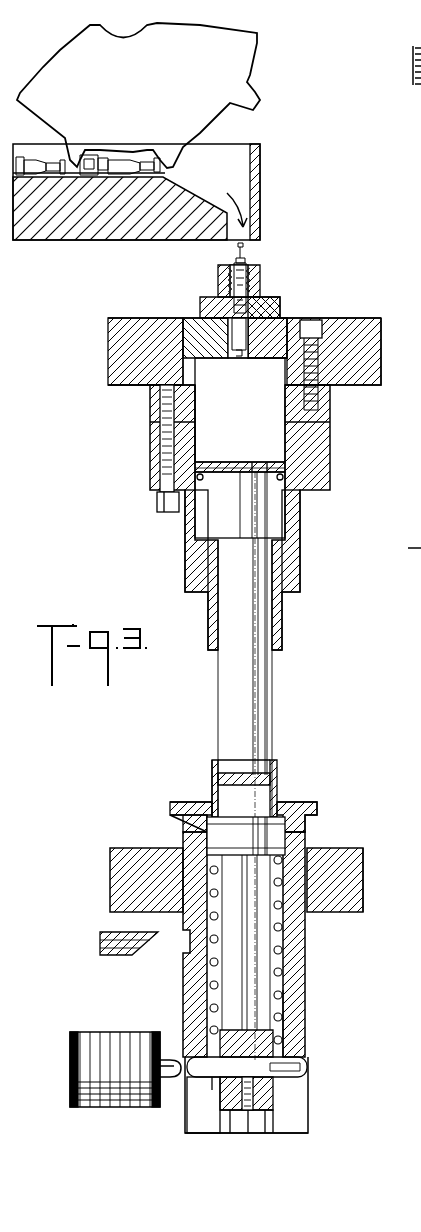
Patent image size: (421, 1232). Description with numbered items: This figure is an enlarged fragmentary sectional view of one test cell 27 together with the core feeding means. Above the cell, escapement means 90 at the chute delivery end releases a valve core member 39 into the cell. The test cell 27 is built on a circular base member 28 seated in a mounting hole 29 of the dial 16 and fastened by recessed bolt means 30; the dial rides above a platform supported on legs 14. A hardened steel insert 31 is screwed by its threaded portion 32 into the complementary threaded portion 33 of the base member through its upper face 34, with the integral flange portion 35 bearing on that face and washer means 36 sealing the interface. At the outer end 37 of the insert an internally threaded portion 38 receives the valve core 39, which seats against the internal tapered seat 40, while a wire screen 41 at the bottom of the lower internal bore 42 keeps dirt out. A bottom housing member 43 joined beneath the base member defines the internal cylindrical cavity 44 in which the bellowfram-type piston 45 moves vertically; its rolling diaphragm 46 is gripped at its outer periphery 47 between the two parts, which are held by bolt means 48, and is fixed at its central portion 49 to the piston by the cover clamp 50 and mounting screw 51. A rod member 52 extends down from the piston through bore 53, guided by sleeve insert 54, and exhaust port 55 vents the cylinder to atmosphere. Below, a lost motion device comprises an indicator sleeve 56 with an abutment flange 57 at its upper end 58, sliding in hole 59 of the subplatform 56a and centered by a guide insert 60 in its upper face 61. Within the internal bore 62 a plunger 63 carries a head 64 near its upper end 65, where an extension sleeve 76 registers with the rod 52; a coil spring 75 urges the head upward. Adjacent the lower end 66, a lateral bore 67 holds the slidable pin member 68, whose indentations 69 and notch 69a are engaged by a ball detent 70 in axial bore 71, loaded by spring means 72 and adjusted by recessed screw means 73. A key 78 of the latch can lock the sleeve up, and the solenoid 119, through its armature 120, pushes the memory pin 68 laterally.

The escapement means 90 is at (230, 104).
The valve core member 39 is at (252, 265).
The outer end of insert 37 is at (263, 286).
The internally threaded portion 38 is at (236, 262).
The integral flange portion 35 is at (216, 300).
The internal tapered seat 40 is at (268, 303).
The hardened steel insert 31 is at (284, 310).
The threaded portion 32 is at (220, 322).
The washer means 36 is at (284, 324).
The upper face 34 is at (300, 330).
The dial 16 is at (378, 335).
The mounting hole 29 is at (190, 329).
The circular base member 28 is at (195, 345).
The complementary threaded portion 33 is at (232, 352).
The lower internal bore 42 is at (244, 352).
The wire screen 41 is at (236, 357).
The recessed bolt means 30 is at (340, 385).
The bottom housing member 43 is at (330, 456).
The internal cylindrical cavity 44 is at (206, 446).
The outer periphery of diaphragm 47 is at (290, 423).
The rolling diaphragm 46 is at (197, 448).
The bolt means 48 is at (160, 466).
The mounting screw 51 is at (245, 462).
The cover clamp 50 is at (262, 462).
The central portion of diaphragm 49 is at (265, 478).
The bellowfram-type piston 45 is at (205, 515).
The test cell 27 is at (141, 508).
The bore 53 is at (190, 565).
The exhaust port 55 is at (282, 572).
The sleeve insert 54 is at (283, 628).
The rod member 52 is at (262, 678).
The upper end of plunger 65 is at (283, 777).
The extension sleeve 76 is at (212, 788).
The upper end of indicator sleeve 58 is at (302, 800).
The abutment flange 57 is at (312, 806).
The indicator sleeve 56 is at (305, 970).
The guide insert 60 is at (205, 845).
The head 64 is at (213, 862).
The upper face of subplatform 61 is at (143, 853).
The hole 59 is at (308, 880).
The subplatform 56a is at (352, 885).
The coil spring 75 is at (282, 935).
The notch 69a is at (263, 1030).
The internal bore 62 is at (283, 1002).
The plunger 63 is at (262, 1031).
The lateral bore 67 is at (307, 1065).
The lower end of plunger 66 is at (273, 1105).
The ball detent 70 is at (262, 1083).
The pin member 68 is at (195, 1080).
The indentations 69 is at (215, 1082).
The legs 14 is at (222, 1133).
The spring means 72 is at (238, 1110).
The recessed screw means 73 is at (250, 1112).
The axial bore 71 is at (258, 1112).
The key 78 is at (125, 952).
The solenoid armature 120 is at (166, 1058).
The solenoid 119 is at (105, 1105).